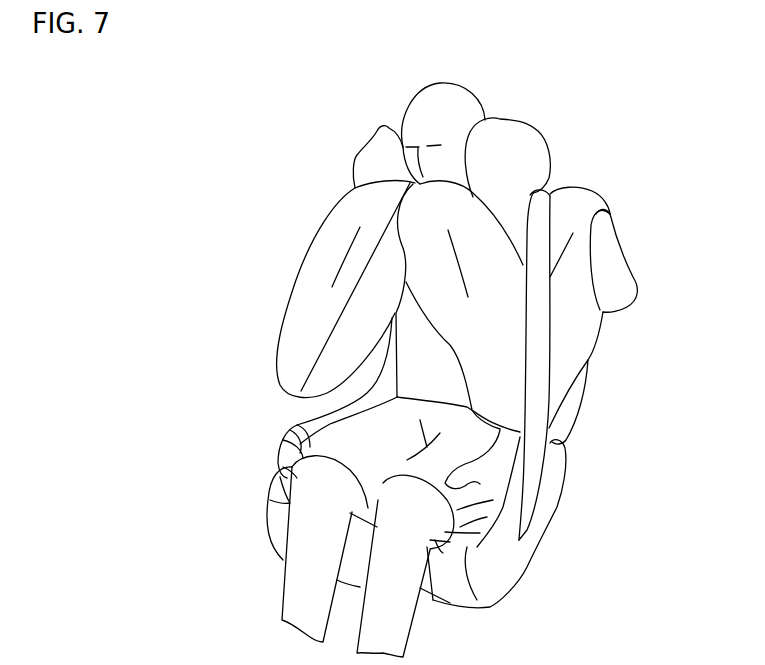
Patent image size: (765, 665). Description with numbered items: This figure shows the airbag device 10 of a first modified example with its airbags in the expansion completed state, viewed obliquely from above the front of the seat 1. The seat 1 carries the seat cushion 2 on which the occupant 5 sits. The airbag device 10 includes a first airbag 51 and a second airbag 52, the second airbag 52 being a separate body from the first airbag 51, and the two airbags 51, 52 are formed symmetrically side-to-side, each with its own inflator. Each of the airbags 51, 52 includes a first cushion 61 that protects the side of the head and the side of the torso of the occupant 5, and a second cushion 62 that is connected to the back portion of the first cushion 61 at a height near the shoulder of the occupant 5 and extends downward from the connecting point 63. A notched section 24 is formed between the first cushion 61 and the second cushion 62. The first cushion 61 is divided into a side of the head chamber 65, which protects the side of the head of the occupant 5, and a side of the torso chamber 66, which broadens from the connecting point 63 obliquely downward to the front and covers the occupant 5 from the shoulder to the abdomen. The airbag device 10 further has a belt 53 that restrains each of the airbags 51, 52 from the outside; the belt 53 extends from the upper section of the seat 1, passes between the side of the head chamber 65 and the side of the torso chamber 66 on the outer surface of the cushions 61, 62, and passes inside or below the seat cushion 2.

The seat 1 is at (393, 524).
The seat cushion 2 is at (517, 556).
The occupant 5 is at (460, 98).
The airbag device 10 is at (458, 301).
The notched section 24 is at (602, 232).
The first airbag 51 is at (326, 204).
The second airbag 52 is at (561, 146).
The belt 53 is at (537, 388).
The first cushion 61 is at (295, 327).
The second cushion 62 is at (625, 289).
The connecting point 63 is at (577, 195).
The side of the head chamber 65 is at (363, 156).
The side of the torso chamber 66 is at (306, 257).